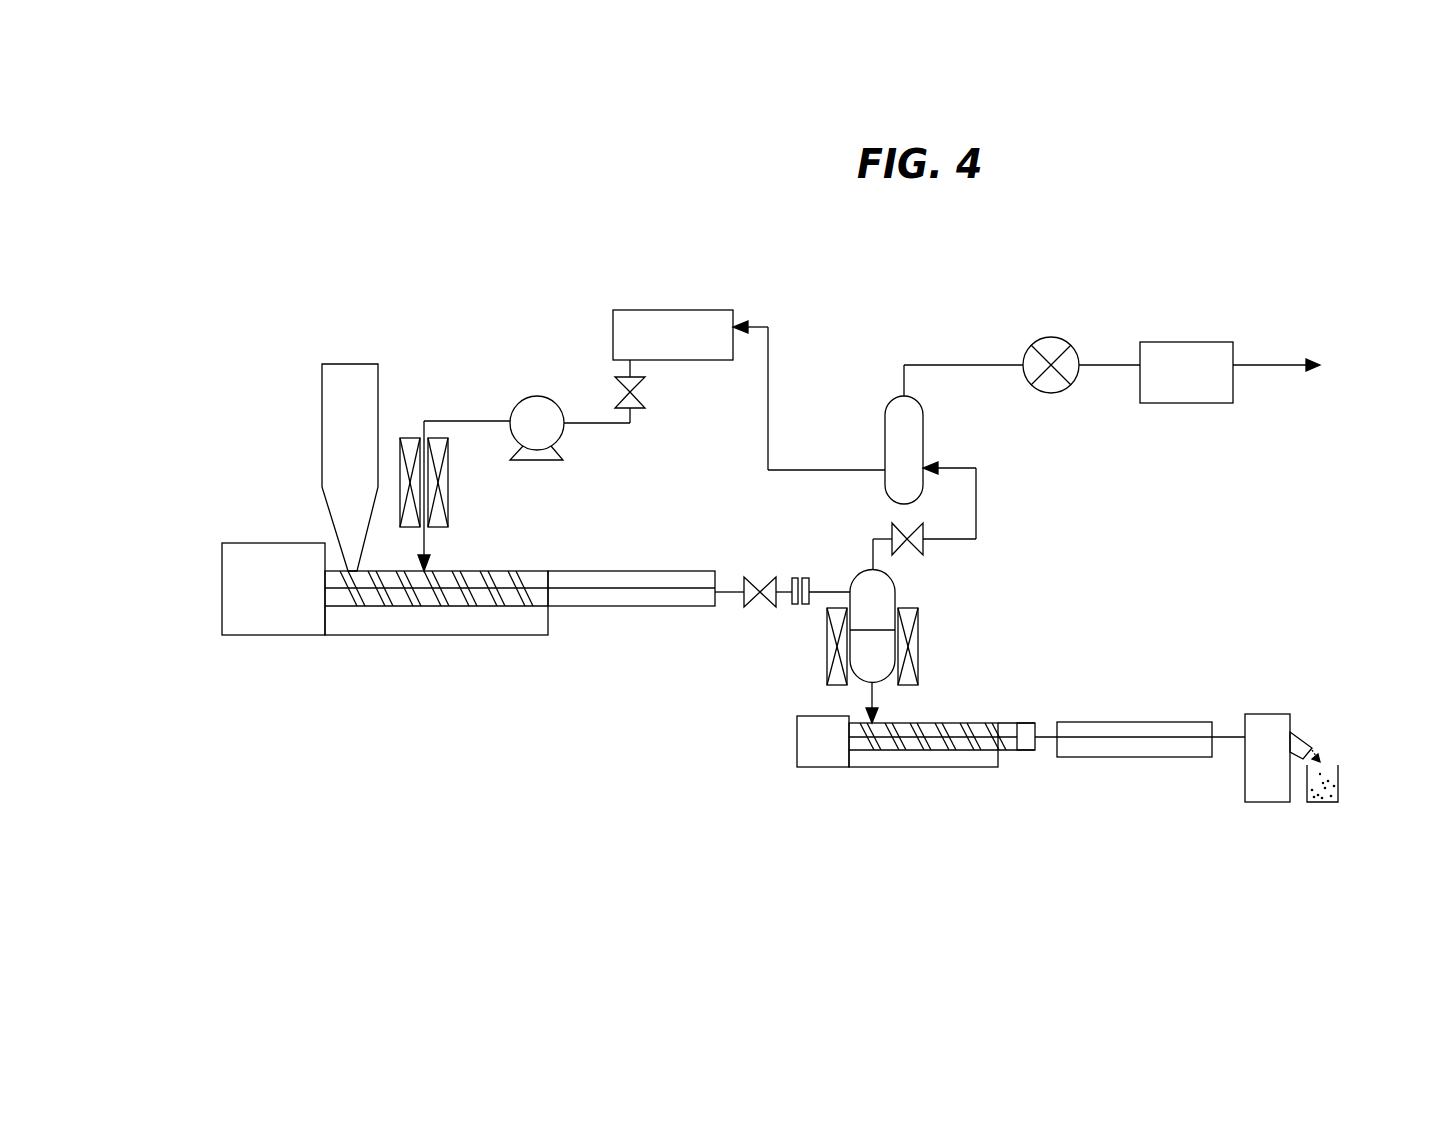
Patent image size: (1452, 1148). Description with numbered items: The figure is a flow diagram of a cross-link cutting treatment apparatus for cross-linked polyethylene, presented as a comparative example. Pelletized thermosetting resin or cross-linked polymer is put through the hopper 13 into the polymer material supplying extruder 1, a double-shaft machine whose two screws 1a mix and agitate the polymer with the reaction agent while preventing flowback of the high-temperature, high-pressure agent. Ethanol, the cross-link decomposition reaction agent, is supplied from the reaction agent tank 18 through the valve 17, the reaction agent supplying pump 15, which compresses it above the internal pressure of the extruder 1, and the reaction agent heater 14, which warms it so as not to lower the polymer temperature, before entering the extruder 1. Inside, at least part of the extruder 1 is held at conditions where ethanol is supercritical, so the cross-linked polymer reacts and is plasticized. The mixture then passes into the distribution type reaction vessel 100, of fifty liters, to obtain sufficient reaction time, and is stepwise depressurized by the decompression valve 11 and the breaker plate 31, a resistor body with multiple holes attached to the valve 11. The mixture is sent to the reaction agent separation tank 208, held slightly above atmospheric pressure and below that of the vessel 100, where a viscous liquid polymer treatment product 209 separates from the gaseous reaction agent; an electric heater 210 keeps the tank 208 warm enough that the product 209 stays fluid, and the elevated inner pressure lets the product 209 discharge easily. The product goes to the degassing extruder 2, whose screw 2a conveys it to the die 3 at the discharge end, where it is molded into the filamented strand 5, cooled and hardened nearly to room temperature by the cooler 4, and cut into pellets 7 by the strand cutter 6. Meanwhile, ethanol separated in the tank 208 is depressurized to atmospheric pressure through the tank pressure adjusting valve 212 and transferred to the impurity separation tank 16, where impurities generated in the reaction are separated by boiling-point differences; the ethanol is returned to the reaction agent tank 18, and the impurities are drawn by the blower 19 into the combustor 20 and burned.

The polymer material supplying extruder 1 is at (368, 623).
The screws 1a is at (488, 603).
The degassing extruder 2 is at (833, 752).
The screw 2a is at (915, 745).
The die 3 is at (1023, 750).
The cooler 4 is at (1103, 757).
The strand 5 is at (1227, 737).
The strand cutter 6 is at (1267, 714).
The pellets 7 is at (1317, 758).
The decompression valve 11 is at (757, 577).
The hopper 13 is at (322, 441).
The reaction agent heater 14 is at (447, 497).
The reaction agent supplying pump 15 is at (520, 400).
The impurity separation tank 16 is at (885, 410).
The valve 17 is at (643, 390).
The reaction agent tank 18 is at (613, 322).
The blower 19 is at (1052, 393).
The combustor 20 is at (1188, 403).
The breaker plate 31 is at (802, 577).
The distribution type reaction vessel 100 is at (650, 571).
The reaction agent separation tank 208 is at (900, 590).
The polymer treatment product 209 is at (857, 645).
The heater 210 is at (827, 680).
The tank pressure adjusting valve 212 is at (925, 545).